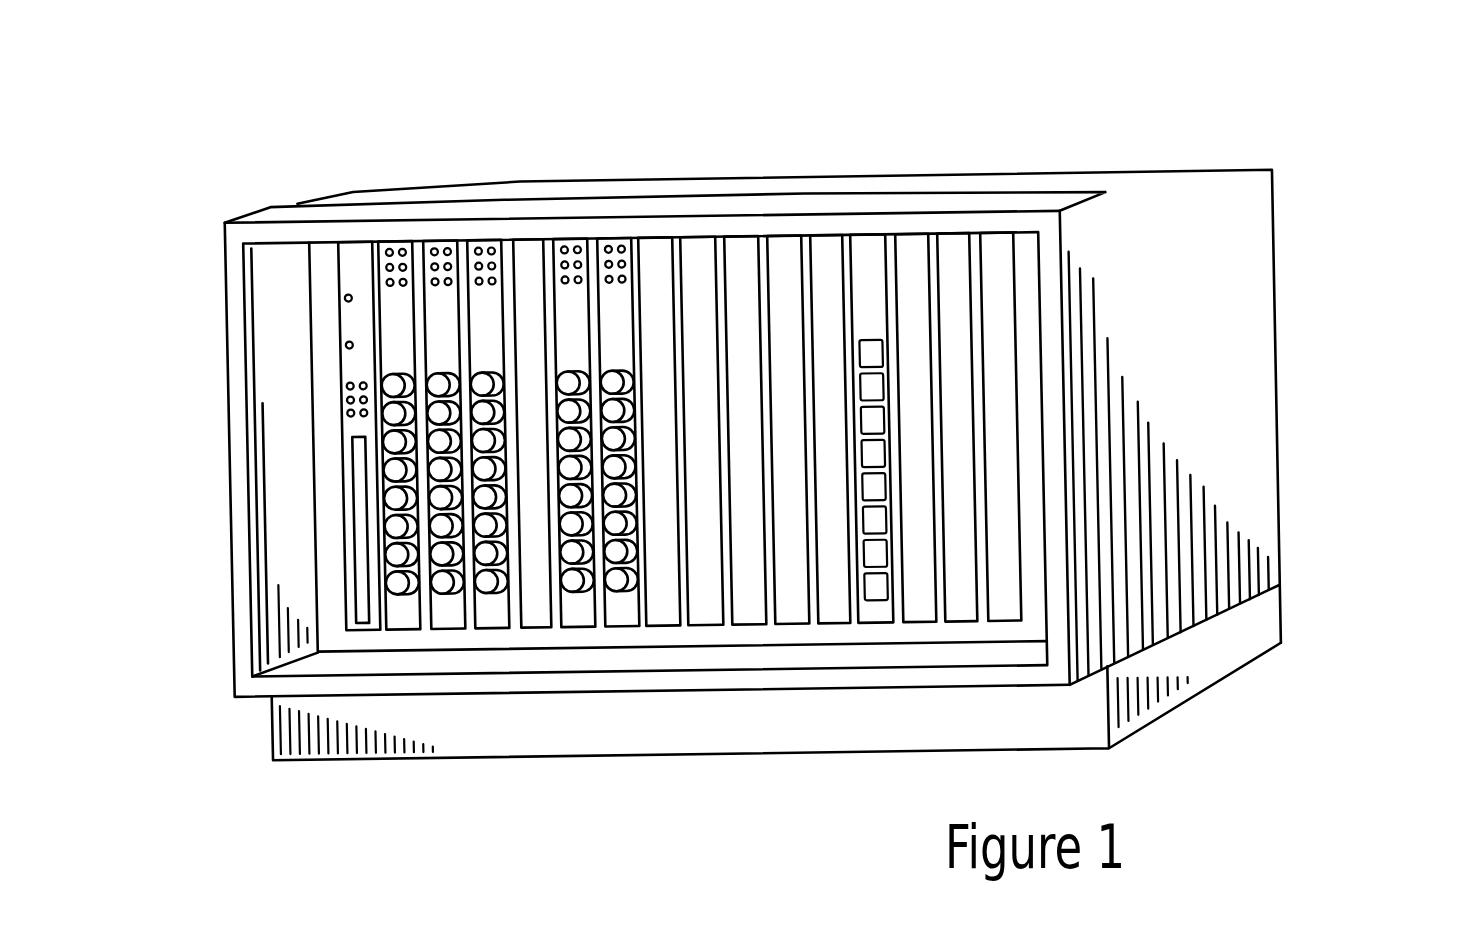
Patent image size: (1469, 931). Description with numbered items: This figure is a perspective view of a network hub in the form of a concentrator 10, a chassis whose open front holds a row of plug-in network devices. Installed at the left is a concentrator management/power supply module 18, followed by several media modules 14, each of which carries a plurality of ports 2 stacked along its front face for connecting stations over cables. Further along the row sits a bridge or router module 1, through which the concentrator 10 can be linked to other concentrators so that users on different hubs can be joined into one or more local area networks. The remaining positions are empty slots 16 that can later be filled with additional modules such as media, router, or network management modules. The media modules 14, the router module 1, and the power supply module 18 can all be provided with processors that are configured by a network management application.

The concentrator 10 is at (1275, 290).
The power supply module 18 is at (350, 257).
The media module 14 is at (413, 630).
The ports 2 is at (383, 385).
The empty slots 16 is at (522, 267).
The bridge or router module 1 is at (863, 252).